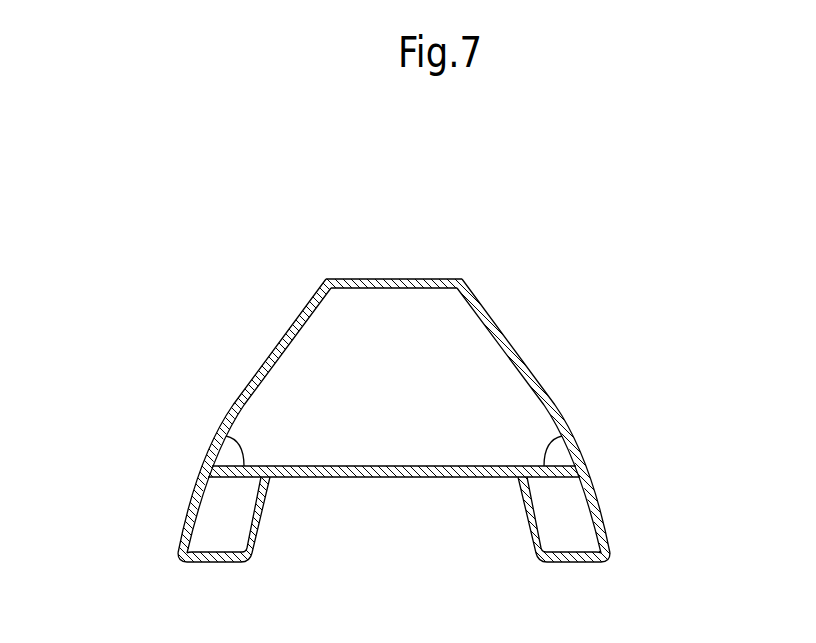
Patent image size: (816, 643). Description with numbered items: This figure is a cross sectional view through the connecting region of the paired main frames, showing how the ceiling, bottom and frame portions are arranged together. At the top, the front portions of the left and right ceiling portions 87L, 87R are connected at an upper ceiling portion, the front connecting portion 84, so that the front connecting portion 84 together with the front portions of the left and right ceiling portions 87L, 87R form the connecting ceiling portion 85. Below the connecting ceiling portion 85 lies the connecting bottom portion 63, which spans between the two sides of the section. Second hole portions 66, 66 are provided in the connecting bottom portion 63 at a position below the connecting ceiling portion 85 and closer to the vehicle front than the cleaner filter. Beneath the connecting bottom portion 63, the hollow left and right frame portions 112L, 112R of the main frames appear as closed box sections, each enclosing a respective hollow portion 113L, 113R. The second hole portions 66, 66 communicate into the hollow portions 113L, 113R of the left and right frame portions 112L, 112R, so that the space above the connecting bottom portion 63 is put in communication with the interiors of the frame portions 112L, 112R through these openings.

The connecting ceiling portion 85 is at (488, 200).
The front connecting portion 84 is at (403, 278).
The right ceiling portion 87R is at (338, 278).
The left ceiling portion 87L is at (458, 278).
The second hole portion 66 is at (224, 437).
The connecting bottom portion 63 is at (383, 480).
The right frame portion 112R is at (193, 497).
The left frame portion 112L is at (597, 488).
The hollow portion 113R is at (180, 554).
The hollow portion 113L is at (607, 545).